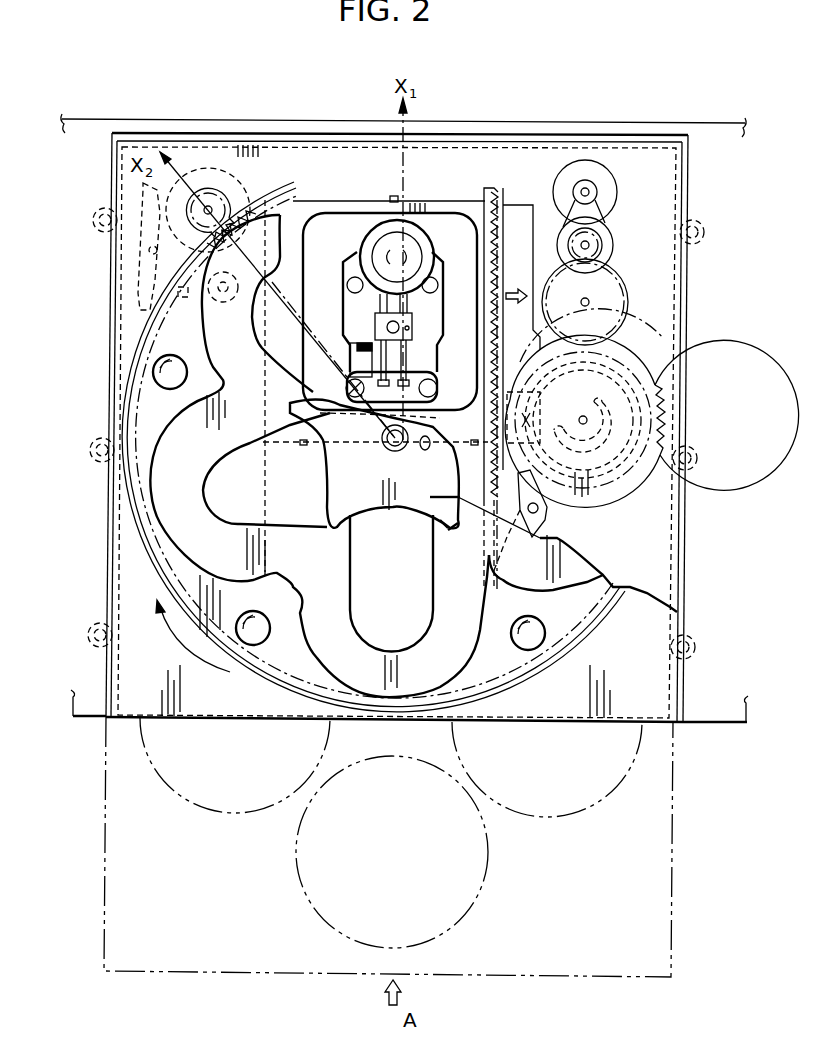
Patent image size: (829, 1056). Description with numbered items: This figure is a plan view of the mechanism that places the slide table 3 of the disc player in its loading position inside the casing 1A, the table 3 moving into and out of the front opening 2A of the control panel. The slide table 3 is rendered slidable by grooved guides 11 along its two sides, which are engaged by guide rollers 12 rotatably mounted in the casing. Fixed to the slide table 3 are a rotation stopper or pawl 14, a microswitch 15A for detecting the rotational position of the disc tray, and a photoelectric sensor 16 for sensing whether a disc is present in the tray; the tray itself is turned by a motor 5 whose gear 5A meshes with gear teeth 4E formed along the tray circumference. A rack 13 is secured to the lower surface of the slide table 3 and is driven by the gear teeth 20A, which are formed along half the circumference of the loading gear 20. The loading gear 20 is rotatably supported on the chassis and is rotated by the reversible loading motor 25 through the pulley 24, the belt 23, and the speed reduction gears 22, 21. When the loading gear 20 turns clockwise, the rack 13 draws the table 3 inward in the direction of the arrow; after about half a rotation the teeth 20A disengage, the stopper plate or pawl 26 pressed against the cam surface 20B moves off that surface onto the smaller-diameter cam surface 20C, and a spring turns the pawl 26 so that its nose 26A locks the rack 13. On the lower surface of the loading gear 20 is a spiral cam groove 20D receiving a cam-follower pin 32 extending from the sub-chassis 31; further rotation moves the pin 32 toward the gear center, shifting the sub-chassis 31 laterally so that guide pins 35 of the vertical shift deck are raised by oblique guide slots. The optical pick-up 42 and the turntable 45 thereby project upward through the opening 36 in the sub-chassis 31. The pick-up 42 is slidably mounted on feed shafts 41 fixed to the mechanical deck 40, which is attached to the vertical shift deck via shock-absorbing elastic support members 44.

The casing 1A is at (707, 727).
The front opening 2A is at (103, 712).
The slide table 3 is at (655, 679).
The grooved guides 11 is at (105, 583).
The guide rollers 12 is at (93, 222).
The rotation stopper or pawl 14 is at (140, 200).
The microswitch 15A is at (180, 292).
The photoelectric sensor 16 is at (225, 292).
The motor 5 is at (211, 185).
The gear 5A is at (185, 172).
The gear teeth 4E is at (243, 213).
The rack 13 is at (494, 188).
The sub-chassis 31 is at (517, 217).
The opening 36 is at (307, 262).
The turntable 45 is at (410, 230).
The mechanical deck 40 is at (353, 303).
The support members 44 is at (435, 280).
The optical pick-up 42 is at (410, 317).
The feed shafts 41 is at (393, 364).
The guide pins 35 is at (392, 197).
The reversible loading motor 25 is at (570, 172).
The pulley 24 is at (588, 186).
The belt 23 is at (595, 187).
The speed reduction gear 22 is at (608, 240).
The speed reduction gear 21 is at (628, 300).
The loading gear 20 is at (651, 405).
The gear teeth (gear segment) 20A is at (663, 338).
The toothless portion (cam surface) 20B is at (662, 382).
The cam surface 20C is at (617, 477).
The spiral cam groove 20D is at (630, 356).
The cam-follower pin 32 is at (532, 418).
The stopper plate or pawl 26 is at (547, 508).
The nose 26A is at (503, 582).